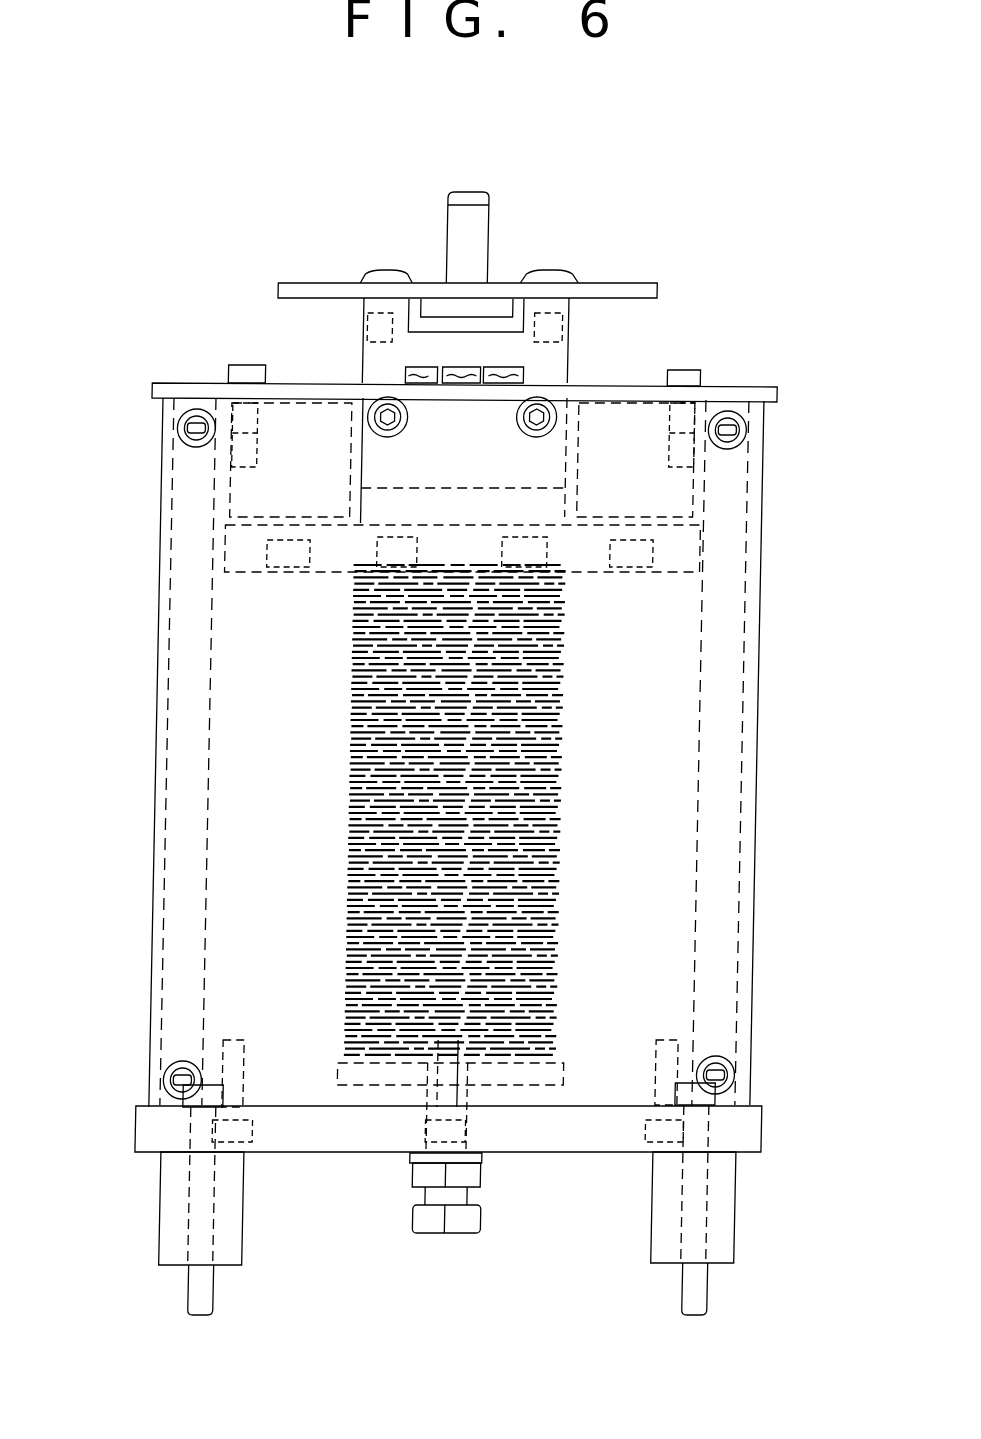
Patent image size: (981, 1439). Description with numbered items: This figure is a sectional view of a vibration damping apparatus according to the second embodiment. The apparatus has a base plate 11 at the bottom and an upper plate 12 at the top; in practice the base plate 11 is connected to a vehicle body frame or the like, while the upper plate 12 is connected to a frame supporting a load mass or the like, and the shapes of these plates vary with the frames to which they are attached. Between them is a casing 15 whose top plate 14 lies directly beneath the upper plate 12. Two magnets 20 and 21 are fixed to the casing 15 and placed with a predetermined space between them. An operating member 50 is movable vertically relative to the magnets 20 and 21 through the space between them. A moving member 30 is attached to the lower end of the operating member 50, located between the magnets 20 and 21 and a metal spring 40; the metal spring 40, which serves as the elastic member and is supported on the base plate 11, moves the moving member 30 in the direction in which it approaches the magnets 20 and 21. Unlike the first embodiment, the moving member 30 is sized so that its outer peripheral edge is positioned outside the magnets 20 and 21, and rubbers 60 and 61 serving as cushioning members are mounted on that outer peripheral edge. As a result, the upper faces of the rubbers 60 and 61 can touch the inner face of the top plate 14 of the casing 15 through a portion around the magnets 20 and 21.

The base plate 11 is at (588, 1143).
The upper plate 12 is at (615, 291).
The top plate 14 is at (637, 385).
The casing 15 is at (757, 631).
The magnet 20 is at (541, 460).
The magnet 21 is at (388, 452).
The moving member 30 is at (678, 553).
The metal spring 40 is at (561, 706).
The operating member 50 is at (376, 347).
The rubber 60 is at (675, 484).
The rubber 61 is at (245, 484).